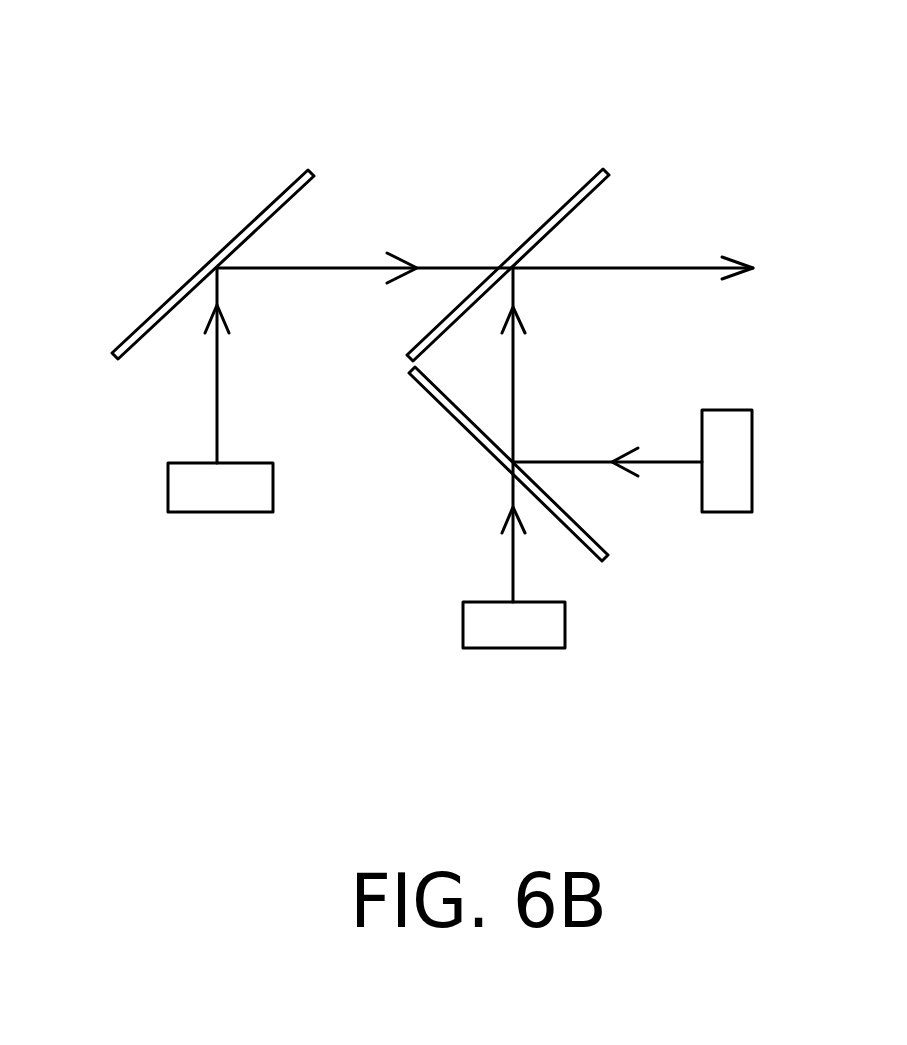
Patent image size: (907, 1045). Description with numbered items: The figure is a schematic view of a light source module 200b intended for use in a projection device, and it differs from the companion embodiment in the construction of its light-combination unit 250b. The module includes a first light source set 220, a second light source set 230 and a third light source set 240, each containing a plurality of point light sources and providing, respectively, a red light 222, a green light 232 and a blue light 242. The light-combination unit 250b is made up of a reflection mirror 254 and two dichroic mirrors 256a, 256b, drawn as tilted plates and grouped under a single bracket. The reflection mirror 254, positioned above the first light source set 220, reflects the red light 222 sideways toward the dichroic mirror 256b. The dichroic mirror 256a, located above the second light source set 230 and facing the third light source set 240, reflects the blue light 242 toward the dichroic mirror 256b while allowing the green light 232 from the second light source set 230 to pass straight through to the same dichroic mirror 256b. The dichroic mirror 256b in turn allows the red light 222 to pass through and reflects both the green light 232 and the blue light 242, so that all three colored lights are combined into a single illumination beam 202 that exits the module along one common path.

The light source module 200b is at (850, 783).
The illumination beam 202 is at (672, 268).
The first light source set 220 is at (227, 495).
The red light 222 is at (213, 437).
The second light source set 230 is at (522, 633).
The green light 232 is at (510, 563).
The third light source set 240 is at (738, 458).
The blue light 242 is at (583, 458).
The light-combination unit 250b is at (590, 80).
The reflection mirror 254 is at (280, 190).
The dichroic mirror 256a is at (457, 422).
The dichroic mirror 256b is at (575, 190).